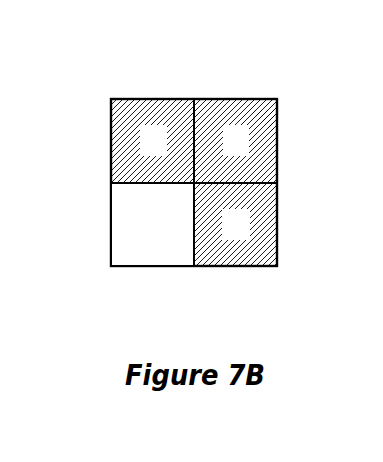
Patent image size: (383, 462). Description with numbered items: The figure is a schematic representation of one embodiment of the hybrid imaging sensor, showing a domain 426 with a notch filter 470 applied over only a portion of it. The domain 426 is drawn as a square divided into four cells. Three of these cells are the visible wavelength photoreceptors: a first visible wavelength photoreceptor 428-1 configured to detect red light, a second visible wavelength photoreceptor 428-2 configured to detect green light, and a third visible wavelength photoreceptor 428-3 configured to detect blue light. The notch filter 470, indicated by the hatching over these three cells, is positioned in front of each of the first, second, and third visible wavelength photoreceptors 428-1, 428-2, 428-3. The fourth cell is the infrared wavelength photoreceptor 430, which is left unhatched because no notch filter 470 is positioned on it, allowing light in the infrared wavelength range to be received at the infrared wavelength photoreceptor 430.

The domain 426 is at (235, 73).
The first visible wavelength photoreceptor 428-1 is at (122, 133).
The second visible wavelength photoreceptor 428-2 is at (270, 157).
The third visible wavelength photoreceptor 428-3 is at (270, 242).
The infrared wavelength photoreceptor 430 is at (122, 220).
The notch filter 470 is at (261, 122).